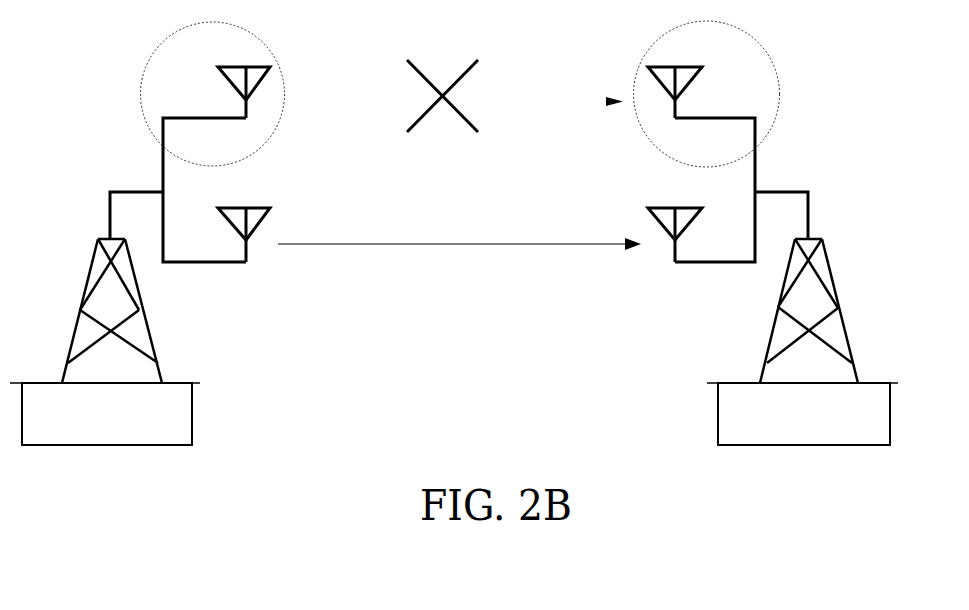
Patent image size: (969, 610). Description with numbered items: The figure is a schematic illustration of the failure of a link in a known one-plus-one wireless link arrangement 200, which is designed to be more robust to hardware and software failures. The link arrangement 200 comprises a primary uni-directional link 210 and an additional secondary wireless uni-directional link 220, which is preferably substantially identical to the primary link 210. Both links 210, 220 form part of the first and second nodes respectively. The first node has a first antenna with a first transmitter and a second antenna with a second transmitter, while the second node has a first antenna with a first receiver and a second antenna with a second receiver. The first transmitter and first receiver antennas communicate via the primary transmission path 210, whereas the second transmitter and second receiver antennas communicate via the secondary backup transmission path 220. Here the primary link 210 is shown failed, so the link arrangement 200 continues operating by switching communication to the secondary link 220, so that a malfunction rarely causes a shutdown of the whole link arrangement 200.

The link arrangement 200 is at (454, 297).
The primary uni-directional link 210 is at (515, 96).
The secondary wireless uni-directional link 220 is at (459, 256).